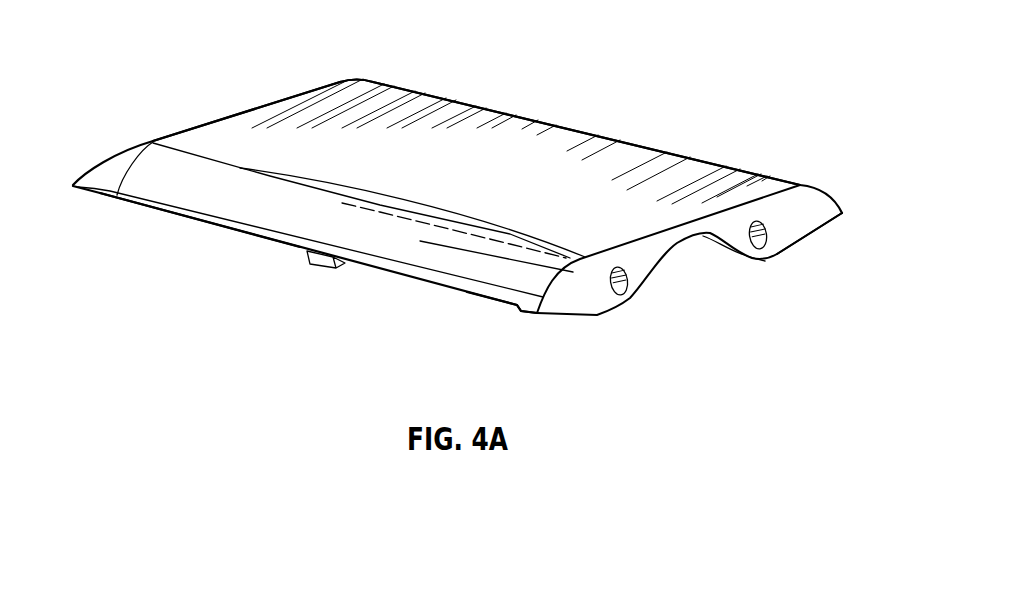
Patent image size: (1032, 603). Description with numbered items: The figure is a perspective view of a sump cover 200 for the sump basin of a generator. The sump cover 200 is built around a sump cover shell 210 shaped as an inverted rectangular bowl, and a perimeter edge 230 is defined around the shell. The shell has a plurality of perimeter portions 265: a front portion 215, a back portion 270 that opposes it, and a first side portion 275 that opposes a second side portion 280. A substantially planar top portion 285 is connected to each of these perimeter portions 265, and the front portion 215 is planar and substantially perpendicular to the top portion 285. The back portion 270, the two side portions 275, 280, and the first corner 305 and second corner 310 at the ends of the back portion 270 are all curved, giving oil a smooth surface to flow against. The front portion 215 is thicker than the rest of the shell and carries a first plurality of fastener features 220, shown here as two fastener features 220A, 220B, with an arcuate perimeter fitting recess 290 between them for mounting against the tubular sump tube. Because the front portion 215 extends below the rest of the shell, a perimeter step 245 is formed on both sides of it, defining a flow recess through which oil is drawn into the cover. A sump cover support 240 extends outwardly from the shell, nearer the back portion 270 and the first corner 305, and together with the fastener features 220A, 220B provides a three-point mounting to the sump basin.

The sump cover 200 is at (116, 36).
The sump cover shell 210 is at (628, 165).
The front portion 215 is at (820, 207).
The first plurality of fastener features 220 is at (774, 231).
The fastener feature 220A is at (627, 286).
The fastener feature 220B is at (766, 250).
The perimeter edge 230 is at (783, 260).
The sump cover support 240 is at (320, 267).
The perimeter step 245 is at (517, 306).
The perimeter portions 265 is at (143, 224).
The back portion 270 is at (210, 118).
The first side portion 275 is at (287, 223).
The second side portion 280 is at (533, 117).
The top portion 285 is at (490, 190).
The perimeter fitting recess 290 is at (673, 247).
The first corner 305 is at (105, 173).
The second corner 310 is at (363, 80).